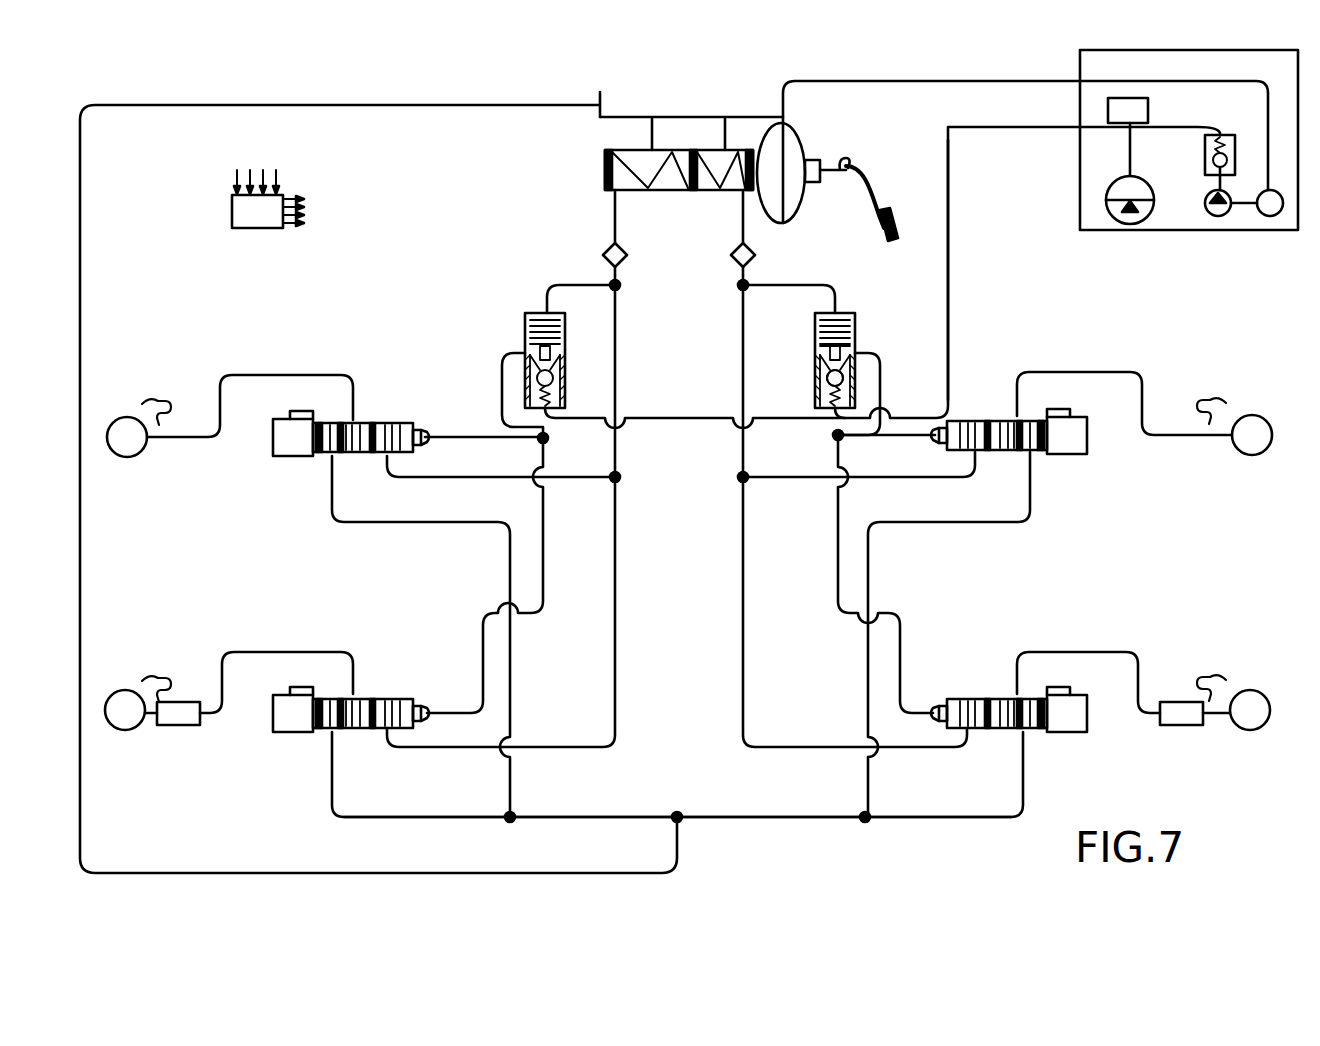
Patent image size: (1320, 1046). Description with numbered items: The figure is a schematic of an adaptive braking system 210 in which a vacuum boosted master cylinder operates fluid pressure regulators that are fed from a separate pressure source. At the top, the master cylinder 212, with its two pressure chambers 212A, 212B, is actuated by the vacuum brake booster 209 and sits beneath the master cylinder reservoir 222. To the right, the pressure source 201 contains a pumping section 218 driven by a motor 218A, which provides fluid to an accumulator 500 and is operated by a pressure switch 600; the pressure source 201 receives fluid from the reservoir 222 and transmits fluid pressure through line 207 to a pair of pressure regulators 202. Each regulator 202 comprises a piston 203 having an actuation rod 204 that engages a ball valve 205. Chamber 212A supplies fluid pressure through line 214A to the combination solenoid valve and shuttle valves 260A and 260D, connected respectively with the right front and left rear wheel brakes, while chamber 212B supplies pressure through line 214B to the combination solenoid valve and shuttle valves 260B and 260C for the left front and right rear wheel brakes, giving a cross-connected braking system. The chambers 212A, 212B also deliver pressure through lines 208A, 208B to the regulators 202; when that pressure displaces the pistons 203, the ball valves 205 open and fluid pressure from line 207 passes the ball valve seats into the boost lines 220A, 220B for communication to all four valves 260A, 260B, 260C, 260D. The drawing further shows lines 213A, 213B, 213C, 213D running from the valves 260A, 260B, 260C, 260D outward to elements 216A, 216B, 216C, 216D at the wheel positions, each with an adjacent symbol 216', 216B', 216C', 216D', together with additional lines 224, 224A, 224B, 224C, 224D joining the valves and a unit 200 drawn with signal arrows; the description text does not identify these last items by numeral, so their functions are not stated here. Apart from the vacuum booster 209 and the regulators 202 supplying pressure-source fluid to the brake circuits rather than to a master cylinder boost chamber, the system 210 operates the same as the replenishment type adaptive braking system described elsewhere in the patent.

The electronic control unit 200 is at (268, 199).
The pressure source 201 is at (1115, 231).
The pressure regulator 202 is at (525, 316).
The piston 203 is at (525, 338).
The actuation rod 204 is at (815, 355).
The ball valve 205 is at (815, 389).
The line 207 is at (949, 226).
The line 208A is at (824, 285).
The line 208B is at (561, 285).
The vacuum brake booster 209 is at (801, 213).
The adaptive braking system 210 is at (516, 90).
The master cylinder 212 is at (606, 150).
The pressure chamber 212A is at (718, 192).
The pressure chamber 212B is at (663, 192).
The brake line to wheel 213A is at (1082, 372).
The brake line to wheel 213B is at (273, 375).
The brake line to wheel 213C is at (282, 652).
The brake line to wheel 213D is at (1080, 652).
The line 214A is at (742, 376).
The line 214B is at (616, 323).
The wheel brake 216A is at (1250, 455).
The wheel brake 216B is at (146, 464).
The wheel brake 216C is at (133, 738).
The wheel brake 216D is at (1263, 737).
The wheel speed sensor 216' is at (1224, 383).
The wheel speed sensor 216B' is at (173, 383).
The wheel speed sensor 216C' is at (164, 660).
The wheel speed sensor 216D' is at (1233, 658).
The pumping section 218 is at (1212, 216).
The motor 218A is at (1270, 216).
The boost line 220A is at (838, 512).
The boost line 220B is at (543, 500).
The master cylinder reservoir 222 is at (712, 110).
The return line 224 is at (679, 842).
The return line branch 224A is at (986, 523).
The return line branch 224B is at (405, 523).
The return line branch 224C is at (418, 819).
The return line branch 224D is at (935, 819).
The combination solenoid valve and shuttle valve 260A is at (1068, 455).
The combination solenoid valve and shuttle valve 260B is at (293, 457).
The combination solenoid valve and shuttle valve 260C is at (293, 733).
The combination solenoid valve and shuttle valve 260D is at (1063, 733).
The accumulator 500 is at (1131, 177).
The pressure switch 600 is at (1148, 110).